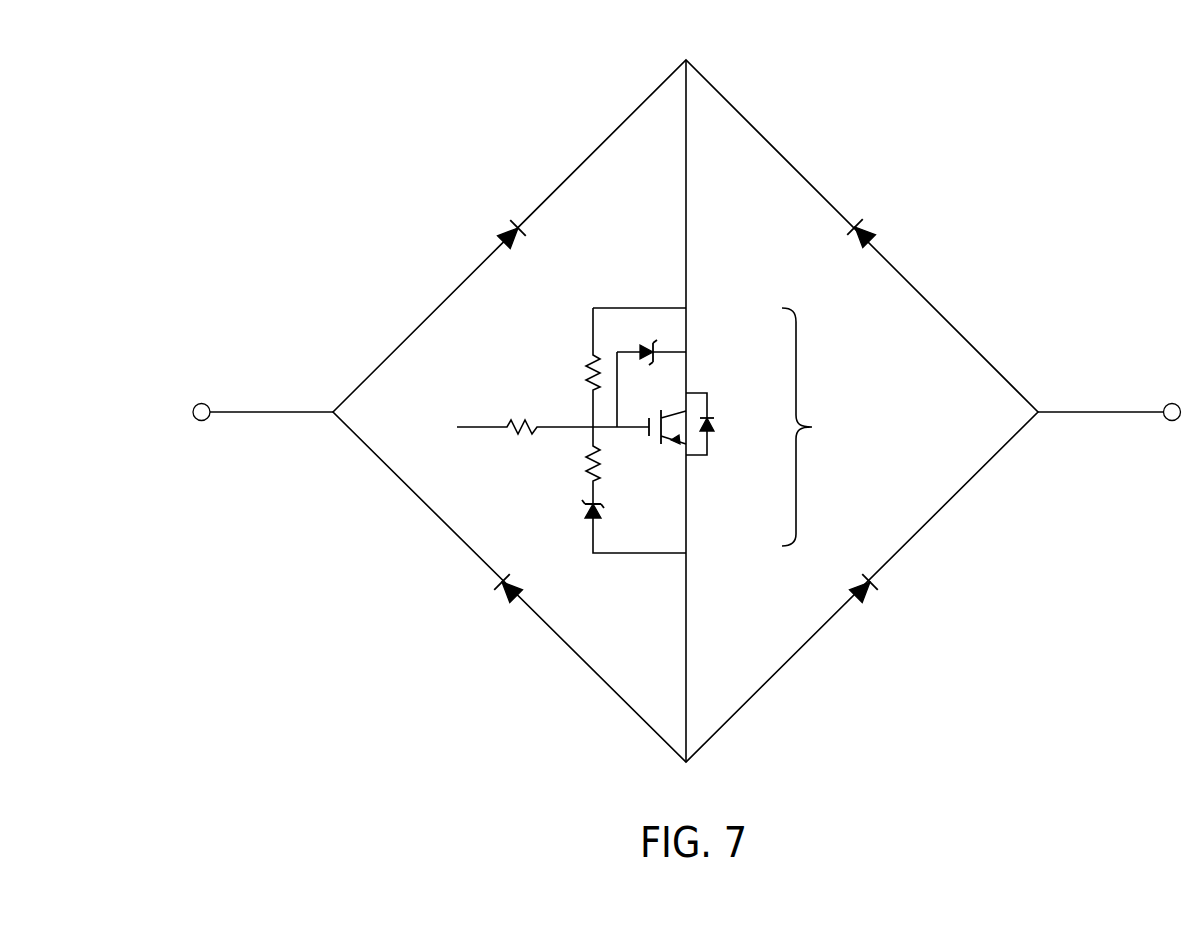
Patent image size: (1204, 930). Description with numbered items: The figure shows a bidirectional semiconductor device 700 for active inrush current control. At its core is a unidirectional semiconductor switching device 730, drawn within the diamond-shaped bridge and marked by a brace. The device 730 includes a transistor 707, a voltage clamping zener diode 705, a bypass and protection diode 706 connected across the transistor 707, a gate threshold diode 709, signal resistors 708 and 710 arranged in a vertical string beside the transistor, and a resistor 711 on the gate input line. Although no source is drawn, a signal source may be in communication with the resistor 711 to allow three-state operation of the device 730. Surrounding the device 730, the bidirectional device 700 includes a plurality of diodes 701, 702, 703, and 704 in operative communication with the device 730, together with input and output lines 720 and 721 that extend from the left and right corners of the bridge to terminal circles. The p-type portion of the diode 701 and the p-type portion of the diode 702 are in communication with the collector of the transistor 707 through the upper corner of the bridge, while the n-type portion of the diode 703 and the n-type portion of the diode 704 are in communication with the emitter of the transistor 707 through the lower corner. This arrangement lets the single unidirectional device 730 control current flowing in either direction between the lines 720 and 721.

The bidirectional semiconductor device 700 is at (975, 120).
The diode 701 is at (505, 232).
The diode 702 is at (868, 226).
The diode 703 is at (506, 598).
The diode 704 is at (868, 592).
The voltage clamping zener diode 705 is at (657, 343).
The bypass and protection diode 706 is at (717, 428).
The transistor 707 is at (655, 442).
The signal resistor 708 is at (587, 470).
The gate threshold diode 709 is at (588, 509).
The signal resistor 710 is at (588, 360).
The resistor 711 is at (503, 423).
The input and output line 720 is at (1172, 403).
The input and output line 721 is at (200, 403).
The unidirectional semiconductor switching device 730 is at (822, 427).